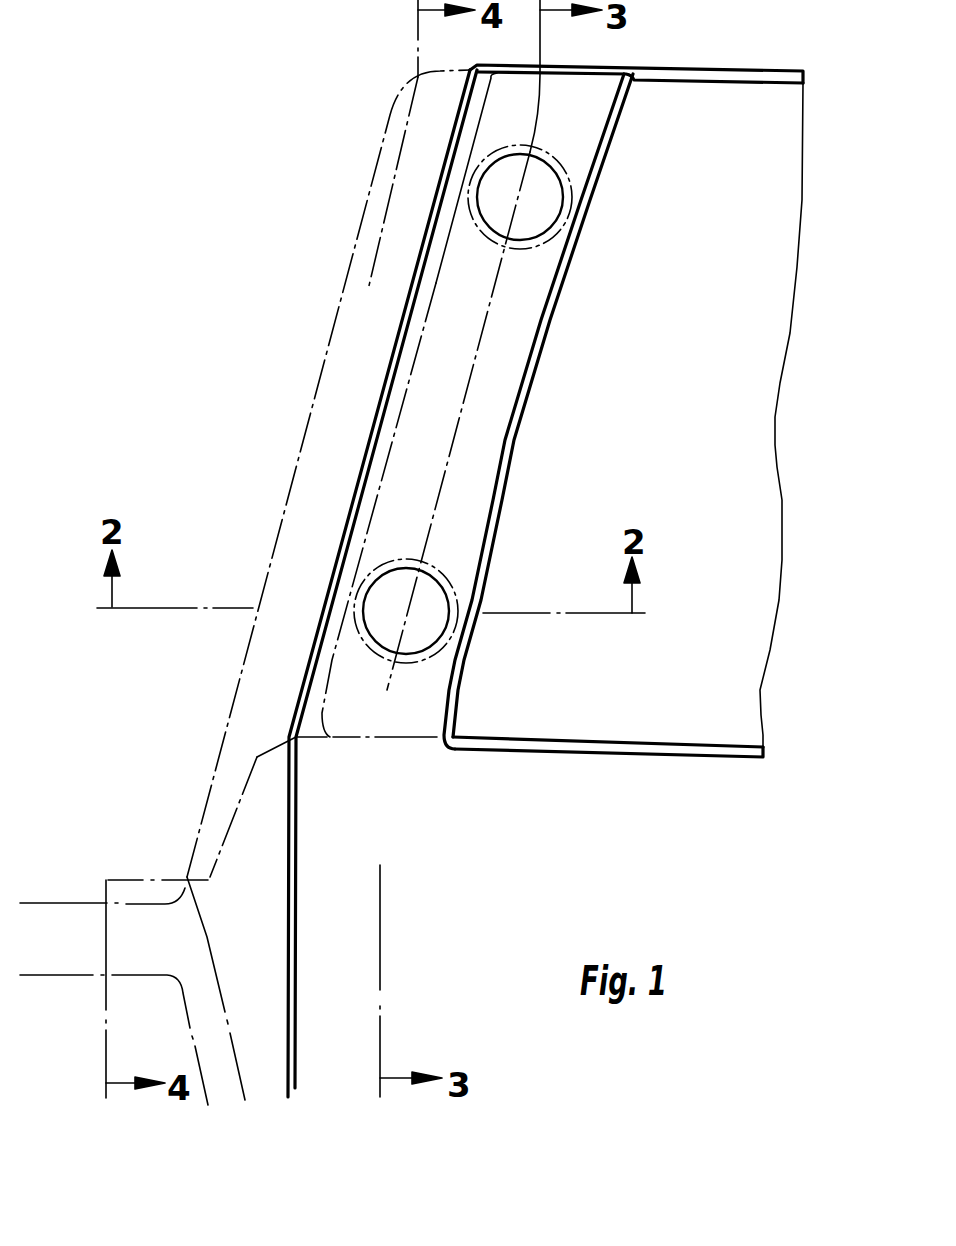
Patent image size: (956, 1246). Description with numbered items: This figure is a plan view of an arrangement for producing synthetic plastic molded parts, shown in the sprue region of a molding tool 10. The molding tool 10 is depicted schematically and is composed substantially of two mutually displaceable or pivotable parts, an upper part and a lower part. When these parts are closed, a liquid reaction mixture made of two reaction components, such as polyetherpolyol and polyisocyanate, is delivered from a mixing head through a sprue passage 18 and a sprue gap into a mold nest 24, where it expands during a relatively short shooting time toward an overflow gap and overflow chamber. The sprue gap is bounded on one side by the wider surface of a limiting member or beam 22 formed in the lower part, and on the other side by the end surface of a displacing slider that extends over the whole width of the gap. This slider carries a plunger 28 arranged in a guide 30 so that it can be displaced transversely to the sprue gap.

The molding tool 10 is at (704, 130).
The sprue passage 18 is at (220, 805).
The limiting member or beam 22 is at (410, 400).
The mold nest 24 is at (590, 700).
The plunger 28 is at (490, 243).
The guide 30 is at (503, 201).